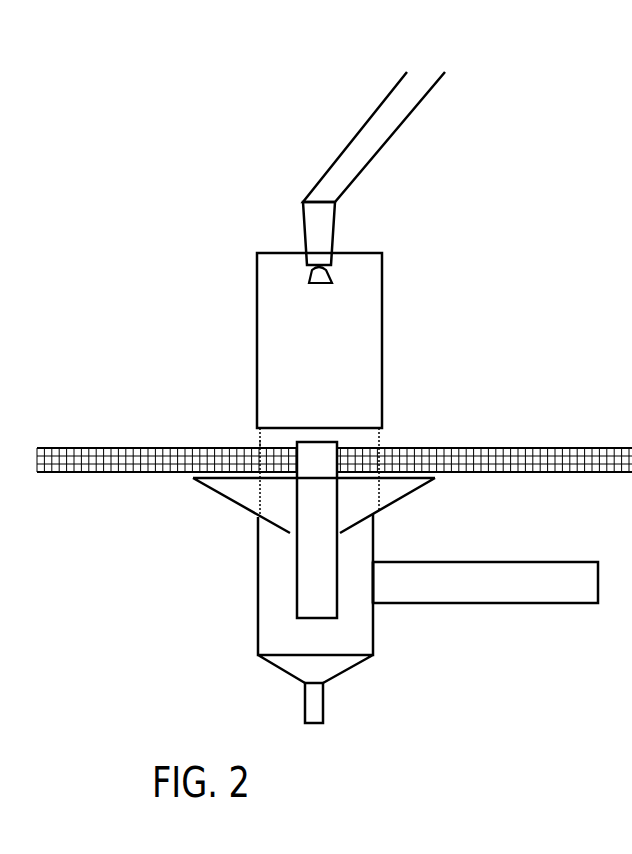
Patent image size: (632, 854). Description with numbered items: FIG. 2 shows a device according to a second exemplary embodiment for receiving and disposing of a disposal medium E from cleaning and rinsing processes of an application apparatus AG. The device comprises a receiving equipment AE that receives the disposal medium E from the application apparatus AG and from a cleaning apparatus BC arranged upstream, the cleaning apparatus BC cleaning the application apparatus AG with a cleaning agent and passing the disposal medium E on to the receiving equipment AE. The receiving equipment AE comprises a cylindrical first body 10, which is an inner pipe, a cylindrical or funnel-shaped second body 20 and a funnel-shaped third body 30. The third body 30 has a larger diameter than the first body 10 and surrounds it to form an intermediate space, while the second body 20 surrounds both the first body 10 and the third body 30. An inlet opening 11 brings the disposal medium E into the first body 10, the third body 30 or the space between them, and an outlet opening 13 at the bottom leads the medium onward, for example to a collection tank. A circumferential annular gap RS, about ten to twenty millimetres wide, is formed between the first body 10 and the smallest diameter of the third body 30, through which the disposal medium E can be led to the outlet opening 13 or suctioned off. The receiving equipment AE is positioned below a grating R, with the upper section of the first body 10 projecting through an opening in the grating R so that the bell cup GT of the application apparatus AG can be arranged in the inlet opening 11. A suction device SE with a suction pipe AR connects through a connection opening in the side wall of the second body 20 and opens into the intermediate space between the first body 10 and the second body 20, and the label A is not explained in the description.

The application apparatus AG is at (302, 227).
The bell cup GT is at (310, 273).
The cleaning apparatus BC is at (265, 323).
The grating R is at (134, 449).
The disposal medium E is at (260, 445).
The inlet opening 11 is at (337, 443).
The receiving equipment AE is at (182, 530).
The third body 30 is at (396, 503).
The first body 10 is at (295, 577).
The second body 20 is at (258, 612).
The outlet opening 13 is at (305, 720).
The annular gap RS is at (342, 533).
The suction pipe AR is at (468, 597).
The suction device SE is at (545, 613).
The outlet A is at (624, 523).